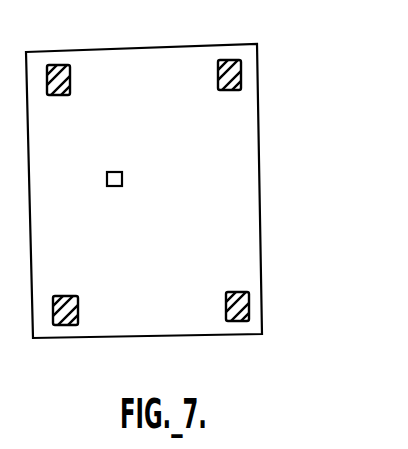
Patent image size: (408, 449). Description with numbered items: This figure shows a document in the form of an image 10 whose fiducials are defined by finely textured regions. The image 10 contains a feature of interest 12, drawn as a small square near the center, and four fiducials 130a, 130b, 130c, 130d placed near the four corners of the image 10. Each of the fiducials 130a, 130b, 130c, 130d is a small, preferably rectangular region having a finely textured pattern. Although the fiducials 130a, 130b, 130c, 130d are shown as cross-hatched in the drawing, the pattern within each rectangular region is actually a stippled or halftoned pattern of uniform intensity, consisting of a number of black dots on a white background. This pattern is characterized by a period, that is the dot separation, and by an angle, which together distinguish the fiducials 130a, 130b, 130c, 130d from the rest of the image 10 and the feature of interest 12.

The image 10 is at (259, 172).
The feature of interest 12 is at (122, 180).
The fiducial 130a is at (58, 65).
The fiducial 130b is at (223, 60).
The fiducial 130c is at (68, 325).
The fiducial 130d is at (237, 321).